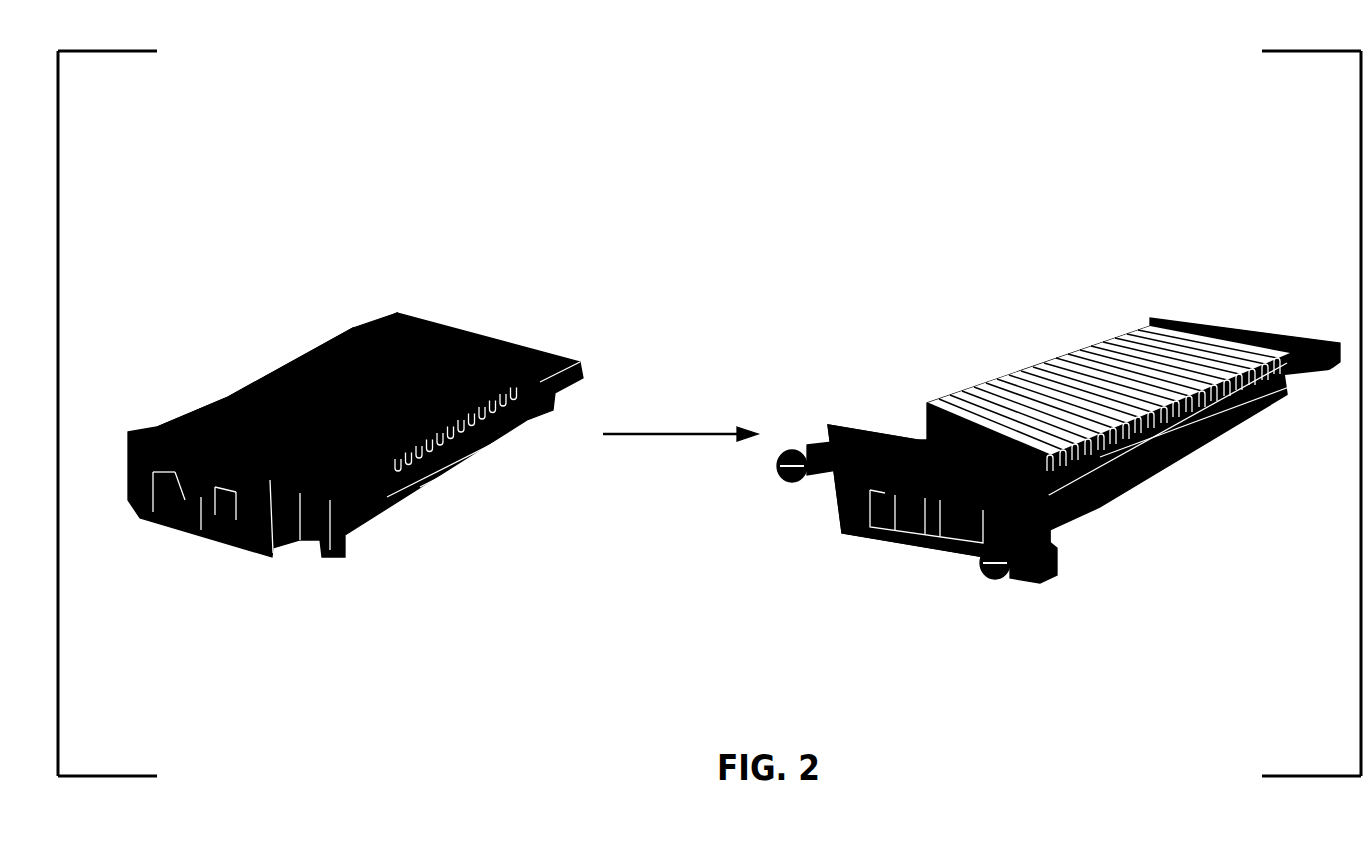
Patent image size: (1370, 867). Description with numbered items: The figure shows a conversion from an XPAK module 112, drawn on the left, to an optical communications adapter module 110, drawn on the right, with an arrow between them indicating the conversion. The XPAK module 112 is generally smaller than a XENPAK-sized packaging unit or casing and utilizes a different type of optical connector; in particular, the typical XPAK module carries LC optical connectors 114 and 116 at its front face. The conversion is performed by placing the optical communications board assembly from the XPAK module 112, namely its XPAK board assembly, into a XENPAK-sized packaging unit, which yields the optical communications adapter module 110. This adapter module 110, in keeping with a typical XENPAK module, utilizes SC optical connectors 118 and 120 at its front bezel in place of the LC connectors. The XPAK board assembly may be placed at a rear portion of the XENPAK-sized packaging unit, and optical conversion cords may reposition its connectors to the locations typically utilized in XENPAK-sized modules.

The optical communications adapter module 110 is at (1032, 415).
The XPAK module 112 is at (233, 387).
The LC optical connector 114 is at (235, 333).
The LC optical connector 116 is at (170, 527).
The SC optical connector 118 is at (971, 495).
The SC optical connector 120 is at (913, 490).